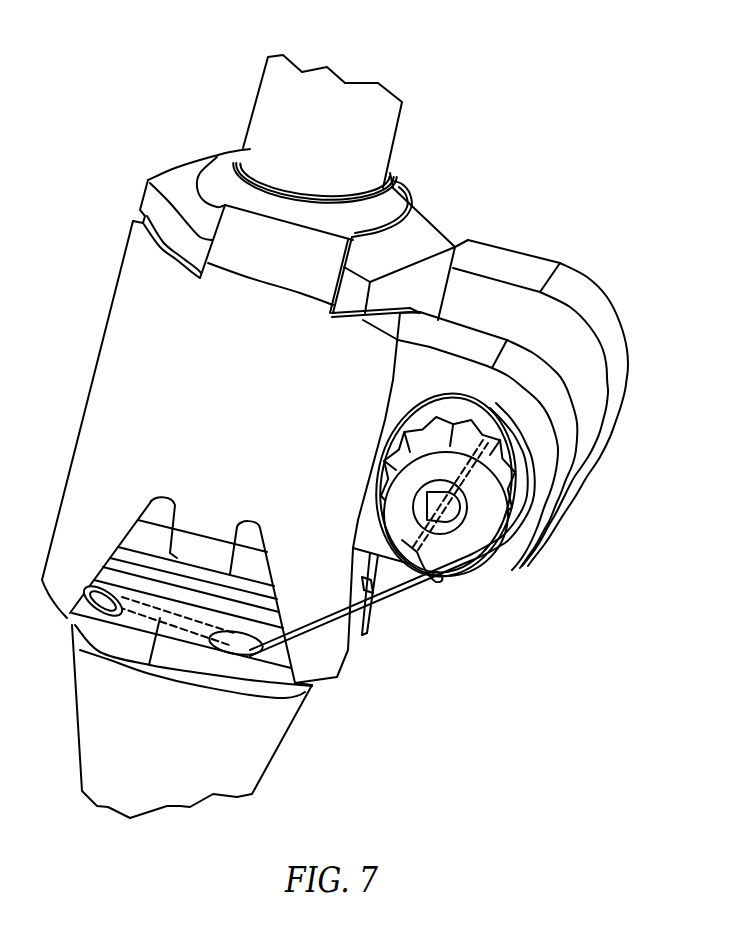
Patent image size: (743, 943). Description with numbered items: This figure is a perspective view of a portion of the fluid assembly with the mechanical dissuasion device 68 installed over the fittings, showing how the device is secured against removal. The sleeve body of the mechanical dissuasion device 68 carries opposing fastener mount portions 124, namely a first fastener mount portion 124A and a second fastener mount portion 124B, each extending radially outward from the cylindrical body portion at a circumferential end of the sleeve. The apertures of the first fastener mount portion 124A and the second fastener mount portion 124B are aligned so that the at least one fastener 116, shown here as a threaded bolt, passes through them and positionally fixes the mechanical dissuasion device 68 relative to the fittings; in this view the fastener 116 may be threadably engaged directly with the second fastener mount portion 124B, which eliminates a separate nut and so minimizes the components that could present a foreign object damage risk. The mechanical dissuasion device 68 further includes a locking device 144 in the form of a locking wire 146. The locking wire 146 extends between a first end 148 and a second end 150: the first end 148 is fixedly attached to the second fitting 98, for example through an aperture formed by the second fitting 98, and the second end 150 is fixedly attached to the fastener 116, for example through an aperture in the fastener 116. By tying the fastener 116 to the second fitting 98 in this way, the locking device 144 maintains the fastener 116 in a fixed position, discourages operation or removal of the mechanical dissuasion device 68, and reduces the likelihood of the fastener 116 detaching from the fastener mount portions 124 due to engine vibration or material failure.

The mechanical dissuasion device 68 is at (613, 260).
The second fitting 98 is at (205, 665).
The fastener 116 is at (526, 484).
The fastener mount portions 124 is at (567, 405).
The first fastener mount portion 124A is at (553, 393).
The second fastener mount portion 124B is at (607, 317).
The locking device 144 is at (410, 598).
The locking wire 146 is at (342, 650).
The first end 148 is at (107, 626).
The second end 150 is at (513, 540).